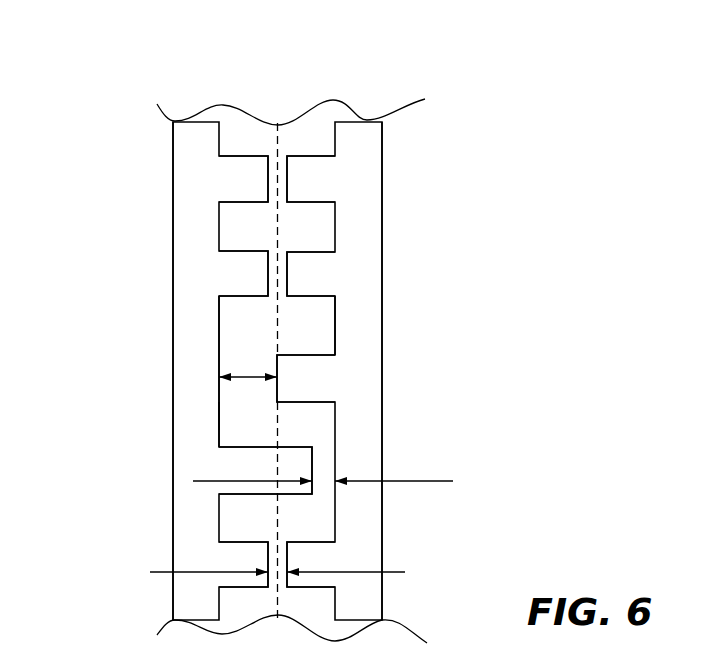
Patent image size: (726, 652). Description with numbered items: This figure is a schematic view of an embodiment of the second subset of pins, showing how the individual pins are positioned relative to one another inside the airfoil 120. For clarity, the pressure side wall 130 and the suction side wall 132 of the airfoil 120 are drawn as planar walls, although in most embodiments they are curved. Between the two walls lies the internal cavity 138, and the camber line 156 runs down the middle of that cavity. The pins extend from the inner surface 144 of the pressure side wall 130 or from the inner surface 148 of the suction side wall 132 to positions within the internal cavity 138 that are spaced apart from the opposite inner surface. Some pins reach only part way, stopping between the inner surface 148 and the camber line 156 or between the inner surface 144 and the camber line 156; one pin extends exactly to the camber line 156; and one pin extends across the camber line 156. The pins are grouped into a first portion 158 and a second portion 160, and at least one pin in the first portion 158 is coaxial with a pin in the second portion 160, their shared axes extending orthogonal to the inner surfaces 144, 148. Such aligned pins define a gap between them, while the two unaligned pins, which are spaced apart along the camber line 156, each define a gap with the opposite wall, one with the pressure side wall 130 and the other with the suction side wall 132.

The airfoil 120 is at (512, 182).
The pressure side wall 130 is at (362, 302).
The suction side wall 132 is at (187, 367).
The internal cavity 138 is at (256, 317).
The inner surface of pressure side wall 144 is at (334, 329).
The inner surface of suction side wall 148 is at (222, 416).
The camber line 156 is at (277, 142).
The first portion of the second subset of pins 158 is at (345, 80).
The second portion of the second subset of pins 160 is at (175, 85).